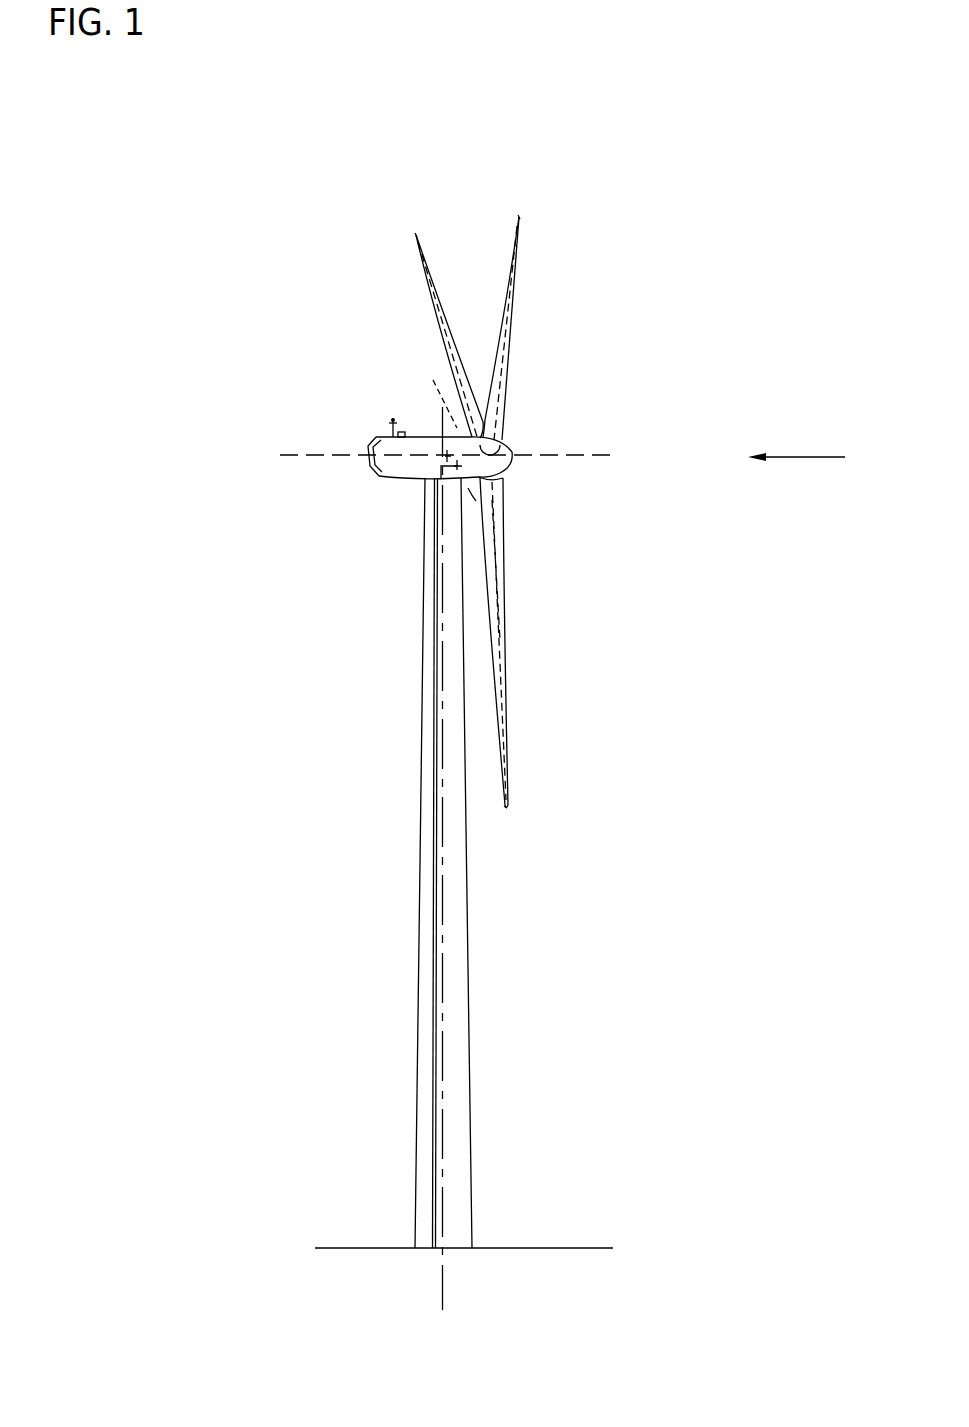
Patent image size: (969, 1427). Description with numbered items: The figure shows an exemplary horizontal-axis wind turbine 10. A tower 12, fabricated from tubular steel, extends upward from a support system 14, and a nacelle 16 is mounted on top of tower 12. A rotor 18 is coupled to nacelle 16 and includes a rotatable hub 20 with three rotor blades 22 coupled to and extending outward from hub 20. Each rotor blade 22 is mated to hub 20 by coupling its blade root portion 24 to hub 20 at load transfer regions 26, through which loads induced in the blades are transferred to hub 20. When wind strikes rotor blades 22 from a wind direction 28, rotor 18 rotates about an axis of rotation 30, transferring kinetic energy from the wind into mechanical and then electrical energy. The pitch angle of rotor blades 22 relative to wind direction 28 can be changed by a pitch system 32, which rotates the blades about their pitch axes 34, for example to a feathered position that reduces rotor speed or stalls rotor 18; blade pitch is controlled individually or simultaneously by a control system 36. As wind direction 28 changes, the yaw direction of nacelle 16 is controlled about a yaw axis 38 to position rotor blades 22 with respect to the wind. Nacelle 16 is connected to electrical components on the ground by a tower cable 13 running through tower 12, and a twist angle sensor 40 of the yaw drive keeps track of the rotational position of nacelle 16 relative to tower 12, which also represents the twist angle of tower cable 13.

The wind turbine 10 is at (196, 230).
The tower 12 is at (418, 1018).
The tower cable 13 is at (418, 958).
The support system 14 is at (372, 1247).
The nacelle 16 is at (396, 478).
The rotor 18 is at (498, 505).
The rotatable hub 20 is at (504, 453).
The rotor blade 22 is at (432, 300).
The blade root portion 24 is at (500, 566).
The load transfer regions 26 is at (500, 478).
The wind direction 28 is at (818, 457).
The axis of rotation 30 is at (577, 457).
The pitch system 32 is at (476, 501).
The pitch axes 34 is at (410, 238).
The control system 36 is at (445, 497).
The yaw axis 38 is at (443, 903).
The twist angle sensor 40 is at (433, 380).